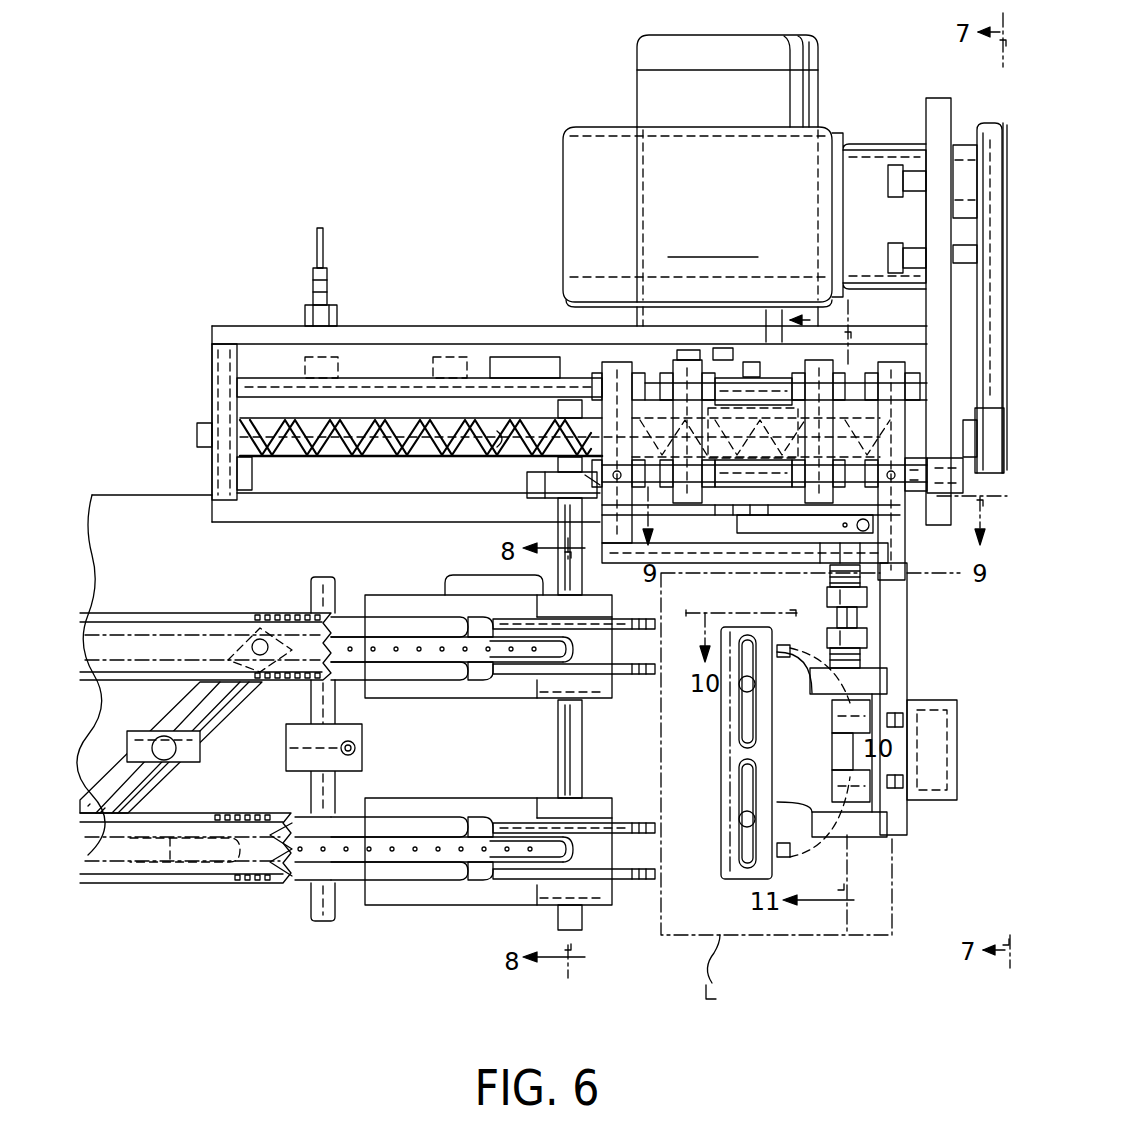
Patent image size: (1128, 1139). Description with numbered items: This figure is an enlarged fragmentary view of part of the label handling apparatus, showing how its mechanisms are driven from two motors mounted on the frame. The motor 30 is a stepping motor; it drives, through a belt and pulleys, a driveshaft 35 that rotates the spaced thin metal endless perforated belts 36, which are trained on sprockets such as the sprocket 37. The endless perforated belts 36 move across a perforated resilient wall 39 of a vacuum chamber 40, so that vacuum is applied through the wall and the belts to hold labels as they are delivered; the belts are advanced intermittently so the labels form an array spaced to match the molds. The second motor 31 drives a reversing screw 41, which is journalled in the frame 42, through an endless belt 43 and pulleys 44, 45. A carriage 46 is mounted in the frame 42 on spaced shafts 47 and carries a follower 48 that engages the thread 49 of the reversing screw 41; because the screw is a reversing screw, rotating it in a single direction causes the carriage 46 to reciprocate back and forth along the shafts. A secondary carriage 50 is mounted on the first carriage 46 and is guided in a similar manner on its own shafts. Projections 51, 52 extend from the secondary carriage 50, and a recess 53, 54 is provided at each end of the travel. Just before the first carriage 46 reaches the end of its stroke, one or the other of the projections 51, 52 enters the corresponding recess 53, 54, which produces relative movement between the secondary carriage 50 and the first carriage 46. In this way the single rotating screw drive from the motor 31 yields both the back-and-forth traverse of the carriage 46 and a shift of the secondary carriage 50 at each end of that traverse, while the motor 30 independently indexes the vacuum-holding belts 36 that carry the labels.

The motor 30 is at (736, 108).
The motor 31 is at (740, 228).
The driveshaft 35 is at (572, 738).
The endless perforated belts 36 is at (180, 612).
The sprocket 37 is at (636, 672).
The perforated resilient wall 39 is at (392, 864).
The vacuum chamber 40 is at (414, 672).
The reversing screw 41 is at (390, 440).
The frame 42 is at (256, 326).
The endless belt 43 is at (984, 118).
The pulley 44 is at (1005, 132).
The pulley 45 is at (1000, 460).
The carriage 46 is at (612, 362).
The spaced shafts 47 is at (274, 388).
The follower 48 is at (768, 410).
The thread 49 is at (496, 448).
The secondary carriage 50 is at (690, 505).
The projection 51 is at (535, 488).
The projection 52 is at (912, 490).
The recess 53 is at (244, 463).
The recess 54 is at (942, 457).